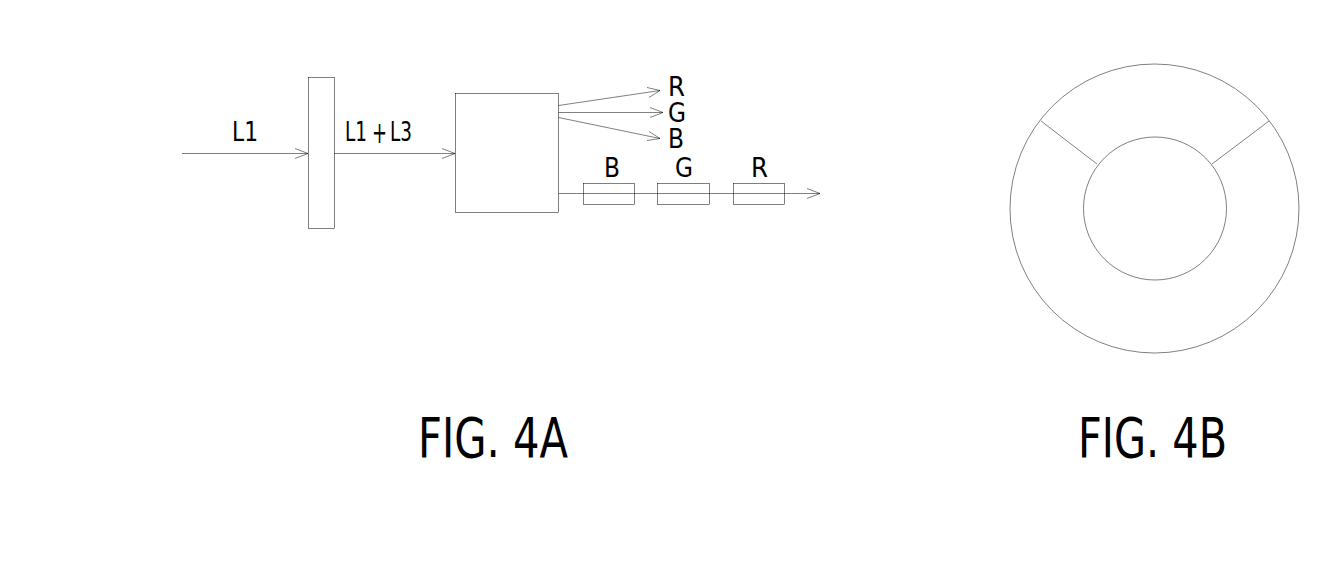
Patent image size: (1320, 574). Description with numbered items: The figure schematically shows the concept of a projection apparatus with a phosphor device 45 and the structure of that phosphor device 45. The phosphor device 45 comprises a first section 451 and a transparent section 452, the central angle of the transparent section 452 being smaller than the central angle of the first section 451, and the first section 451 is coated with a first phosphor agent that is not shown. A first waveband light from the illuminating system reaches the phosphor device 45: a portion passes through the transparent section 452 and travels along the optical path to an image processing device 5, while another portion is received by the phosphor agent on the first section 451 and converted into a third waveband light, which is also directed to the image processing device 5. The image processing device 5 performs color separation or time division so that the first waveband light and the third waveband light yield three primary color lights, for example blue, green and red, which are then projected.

In FIG. 4A, the image processing device 5 is at (508, 94).
In FIG. 4A, the phosphor device 45 is at (322, 228).
In FIG. 4B, the phosphor device 45 is at (1057, 68).
In FIG. 4B, the first section 451 is at (1155, 236).
In FIG. 4B, the transparent section 452 is at (1155, 128).